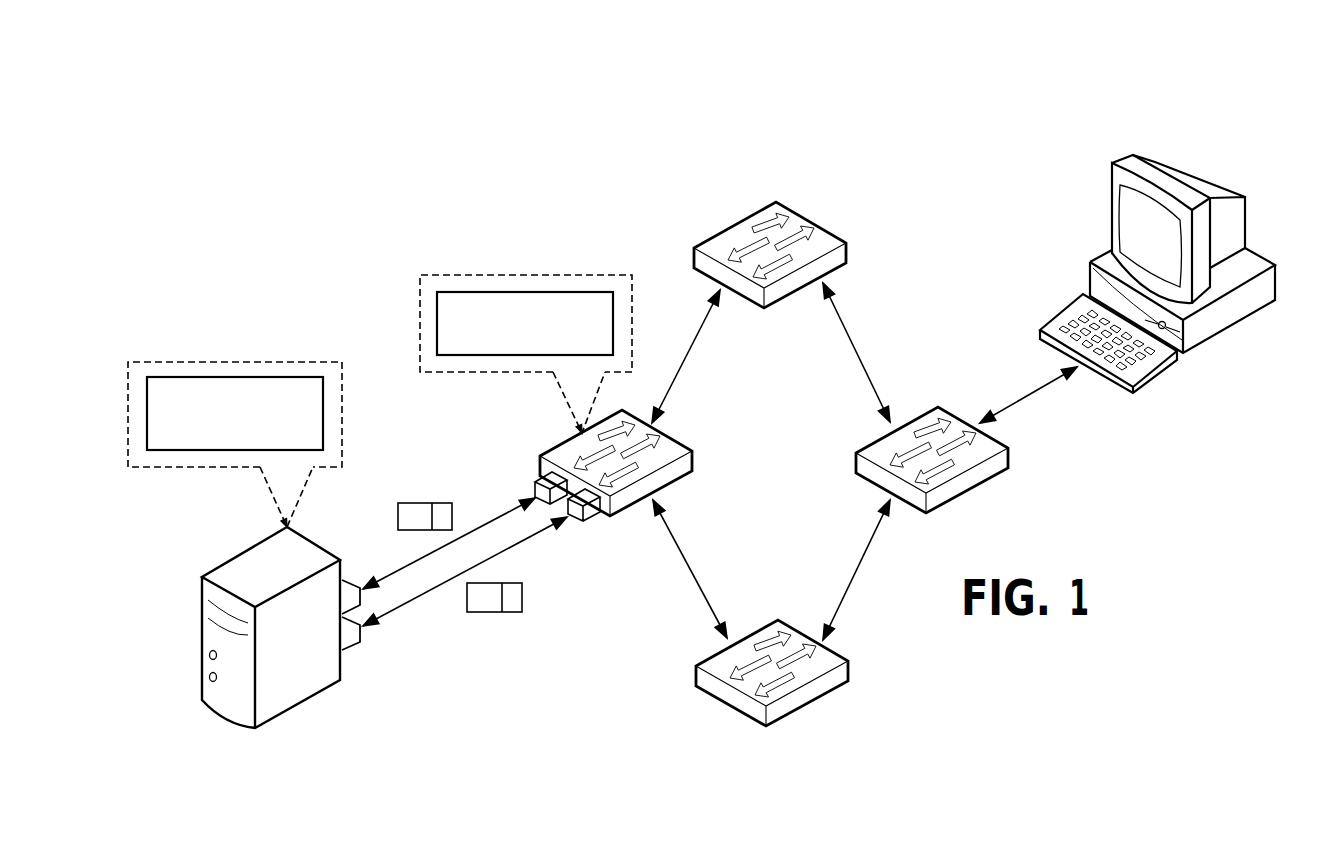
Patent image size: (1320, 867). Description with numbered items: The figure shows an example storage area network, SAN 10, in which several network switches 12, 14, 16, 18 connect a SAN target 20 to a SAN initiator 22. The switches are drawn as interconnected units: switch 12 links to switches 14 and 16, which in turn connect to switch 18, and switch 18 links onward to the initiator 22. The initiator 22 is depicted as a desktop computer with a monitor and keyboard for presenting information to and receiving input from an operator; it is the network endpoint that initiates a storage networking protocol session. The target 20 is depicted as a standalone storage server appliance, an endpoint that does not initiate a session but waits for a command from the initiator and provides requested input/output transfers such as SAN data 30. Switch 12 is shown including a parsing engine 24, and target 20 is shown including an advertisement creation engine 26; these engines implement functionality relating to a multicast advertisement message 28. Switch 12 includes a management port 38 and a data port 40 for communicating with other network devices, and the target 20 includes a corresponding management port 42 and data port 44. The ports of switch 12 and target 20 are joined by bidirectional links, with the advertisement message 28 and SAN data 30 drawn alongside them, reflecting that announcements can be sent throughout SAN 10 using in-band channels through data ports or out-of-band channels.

The SAN 10 is at (552, 155).
The network switch 12 is at (680, 486).
The network switch 14 is at (815, 220).
The network switch 16 is at (730, 711).
The network switch 18 is at (975, 493).
The SAN target 20 is at (202, 640).
The SAN initiator 22 is at (1215, 177).
The parsing engine 24 is at (527, 292).
The advertisement creation engine 26 is at (235, 377).
The multicast advertisement message 28 is at (493, 612).
The SAN data 30 is at (425, 503).
The management port 38 is at (590, 521).
The data port 40 is at (535, 487).
The management port 42 is at (360, 648).
The data port 44 is at (354, 580).